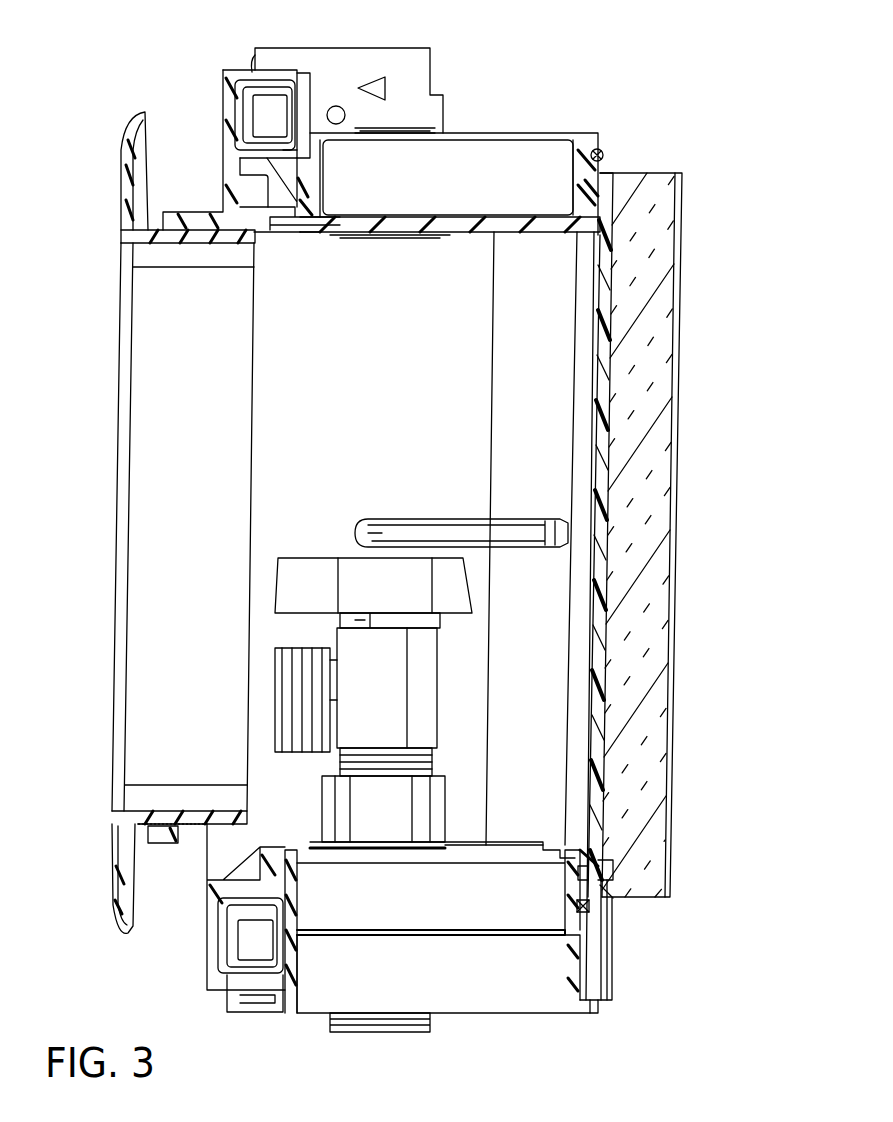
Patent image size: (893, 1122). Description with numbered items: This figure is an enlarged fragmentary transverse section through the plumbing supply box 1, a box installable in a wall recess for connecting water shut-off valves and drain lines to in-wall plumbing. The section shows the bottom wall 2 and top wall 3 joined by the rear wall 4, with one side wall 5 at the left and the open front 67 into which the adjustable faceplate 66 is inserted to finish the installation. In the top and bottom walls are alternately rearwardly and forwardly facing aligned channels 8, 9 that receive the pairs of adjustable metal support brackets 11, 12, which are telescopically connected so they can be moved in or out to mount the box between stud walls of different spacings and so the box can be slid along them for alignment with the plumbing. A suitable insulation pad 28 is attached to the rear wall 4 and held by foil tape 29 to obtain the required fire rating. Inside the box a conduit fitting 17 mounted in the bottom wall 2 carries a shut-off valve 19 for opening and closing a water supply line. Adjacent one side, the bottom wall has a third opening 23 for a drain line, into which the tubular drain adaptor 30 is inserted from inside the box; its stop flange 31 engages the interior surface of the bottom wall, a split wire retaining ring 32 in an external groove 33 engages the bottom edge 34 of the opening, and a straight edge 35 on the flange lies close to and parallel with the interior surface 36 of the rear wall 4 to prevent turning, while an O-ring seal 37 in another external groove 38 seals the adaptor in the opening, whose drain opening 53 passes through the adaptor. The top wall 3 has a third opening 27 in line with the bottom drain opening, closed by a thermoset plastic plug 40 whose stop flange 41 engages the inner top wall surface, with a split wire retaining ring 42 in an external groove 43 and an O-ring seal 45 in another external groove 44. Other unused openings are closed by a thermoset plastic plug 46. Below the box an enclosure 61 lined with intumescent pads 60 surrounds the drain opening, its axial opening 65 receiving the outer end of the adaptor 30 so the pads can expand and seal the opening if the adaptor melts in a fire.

The plumbing supply box 1 is at (556, 100).
The bottom wall 2 is at (228, 900).
The top wall 3 is at (228, 180).
The rear wall 4 is at (606, 472).
The side wall 5 is at (272, 394).
The channel 8 is at (236, 72).
The channel 9 is at (306, 90).
The adjustable metal support bracket 11 is at (248, 120).
The adjustable metal support bracket 12 is at (240, 108).
The conduit fitting 17 is at (432, 786).
The shut-off valve 19 is at (424, 690).
The third opening 23 is at (603, 870).
The third opening 27 is at (601, 178).
The insulation pad 28 is at (650, 282).
The foil tape 29 is at (680, 235).
The tubular drain adaptor 30 is at (556, 985).
The stop flange 31 is at (300, 842).
The split wire retaining ring 32 is at (606, 934).
The external groove 33 is at (577, 916).
The bottom edge 34 is at (604, 905).
The straight edge 35 is at (602, 858).
The interior surface 36 is at (580, 836).
The O-ring seal 37 is at (605, 882).
The external groove 38 is at (577, 874).
The thermoset plastic plug 40 is at (606, 130).
The stop flange 41 is at (312, 232).
The split wire retaining ring 42 is at (606, 150).
The external groove 43 is at (594, 150).
The external groove 44 is at (594, 182).
The O-ring seal 45 is at (601, 196).
The thermoset plastic plug 46 is at (438, 118).
The drain opening 53 is at (500, 842).
The intumescent pad 60 is at (614, 952).
The enclosure 61 is at (616, 990).
The axial opening 65 is at (592, 1012).
The adjustable faceplate 66 is at (114, 838).
The open front 67 is at (210, 489).